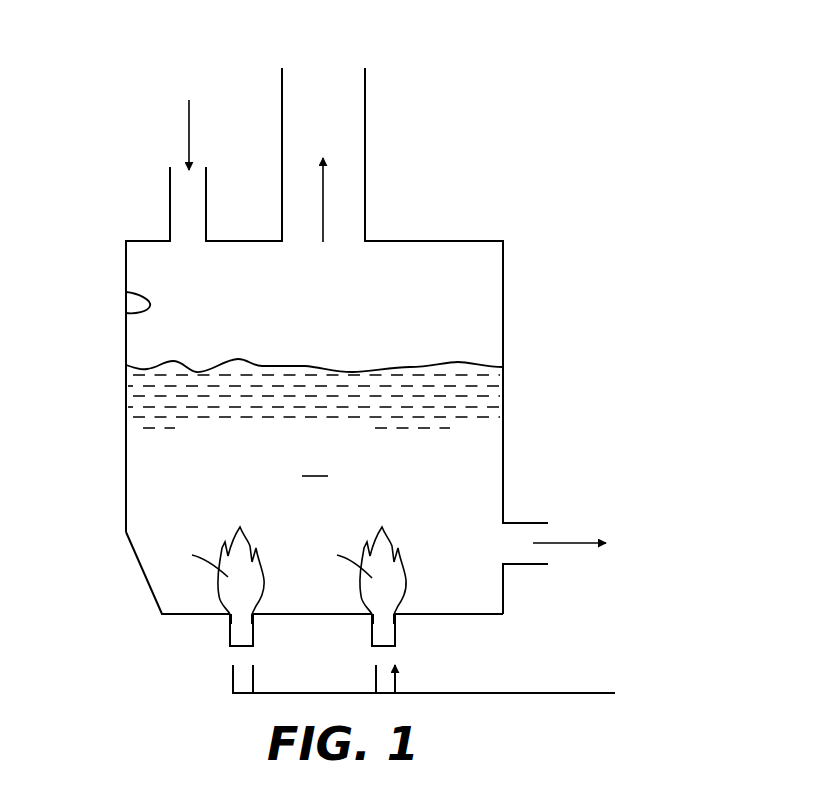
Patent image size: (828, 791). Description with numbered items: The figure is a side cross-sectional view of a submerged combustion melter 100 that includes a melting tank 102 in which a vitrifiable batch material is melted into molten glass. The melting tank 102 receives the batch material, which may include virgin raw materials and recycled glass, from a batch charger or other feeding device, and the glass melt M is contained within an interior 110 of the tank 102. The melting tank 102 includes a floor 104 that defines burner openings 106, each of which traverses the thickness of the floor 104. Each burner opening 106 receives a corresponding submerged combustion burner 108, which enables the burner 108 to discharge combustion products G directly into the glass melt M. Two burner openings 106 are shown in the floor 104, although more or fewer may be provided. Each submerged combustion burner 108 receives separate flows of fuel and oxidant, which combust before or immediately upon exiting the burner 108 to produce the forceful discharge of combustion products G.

The submerged combustion melter 100 is at (541, 180).
The melting tank 102 is at (504, 413).
The floor 104 is at (188, 615).
The burner opening 106 is at (222, 626).
The submerged combustion burner 108 is at (382, 628).
The interior 110 is at (126, 313).